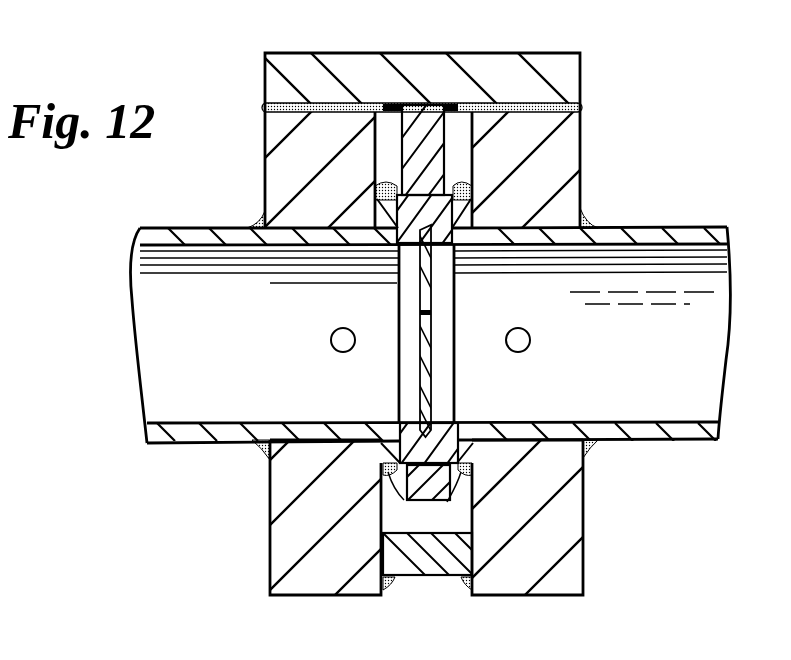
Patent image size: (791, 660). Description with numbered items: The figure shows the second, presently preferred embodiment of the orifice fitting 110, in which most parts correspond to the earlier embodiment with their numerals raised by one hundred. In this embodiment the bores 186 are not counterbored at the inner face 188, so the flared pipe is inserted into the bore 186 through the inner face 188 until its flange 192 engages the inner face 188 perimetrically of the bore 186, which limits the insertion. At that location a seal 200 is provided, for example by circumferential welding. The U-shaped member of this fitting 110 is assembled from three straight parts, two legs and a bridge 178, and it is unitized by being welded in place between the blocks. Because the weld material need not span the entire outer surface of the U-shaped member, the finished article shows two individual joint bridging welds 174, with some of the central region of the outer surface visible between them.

The orifice fitting 110 is at (624, 186).
The joint bridging welds 174 is at (388, 587).
The bridge 178 is at (418, 564).
The bores 186 is at (313, 440).
The inner face 188 is at (373, 176).
The flange 192 is at (385, 435).
The seal 200 is at (425, 494).